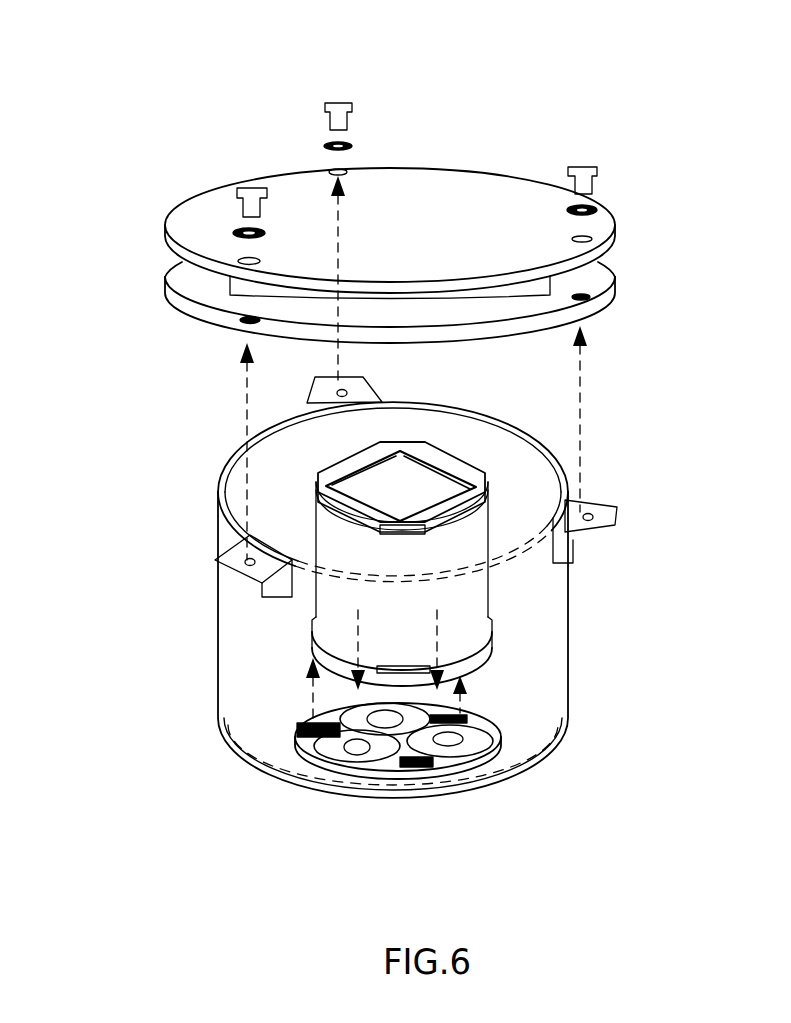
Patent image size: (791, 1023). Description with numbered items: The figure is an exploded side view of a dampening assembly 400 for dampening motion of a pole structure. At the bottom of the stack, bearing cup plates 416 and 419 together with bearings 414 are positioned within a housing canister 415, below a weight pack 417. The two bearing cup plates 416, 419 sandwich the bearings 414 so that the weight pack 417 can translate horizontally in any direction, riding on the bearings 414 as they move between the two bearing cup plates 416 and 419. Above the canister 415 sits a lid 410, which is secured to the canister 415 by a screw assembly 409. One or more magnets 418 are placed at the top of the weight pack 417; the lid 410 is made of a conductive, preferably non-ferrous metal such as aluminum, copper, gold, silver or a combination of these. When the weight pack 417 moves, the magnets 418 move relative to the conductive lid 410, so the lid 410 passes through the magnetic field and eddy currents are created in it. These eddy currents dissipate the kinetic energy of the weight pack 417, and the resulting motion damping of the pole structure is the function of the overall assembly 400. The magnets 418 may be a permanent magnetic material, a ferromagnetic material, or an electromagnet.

The dampening assembly 400 is at (674, 337).
The screw assembly 409 is at (208, 221).
The lid 410 is at (412, 183).
The bearings 414 is at (500, 738).
The housing canister 415 is at (538, 618).
The bearing cup plate 416 is at (313, 662).
The weight pack 417 is at (477, 527).
The magnet 418 is at (362, 480).
The bearing cup plate 419 is at (300, 740).